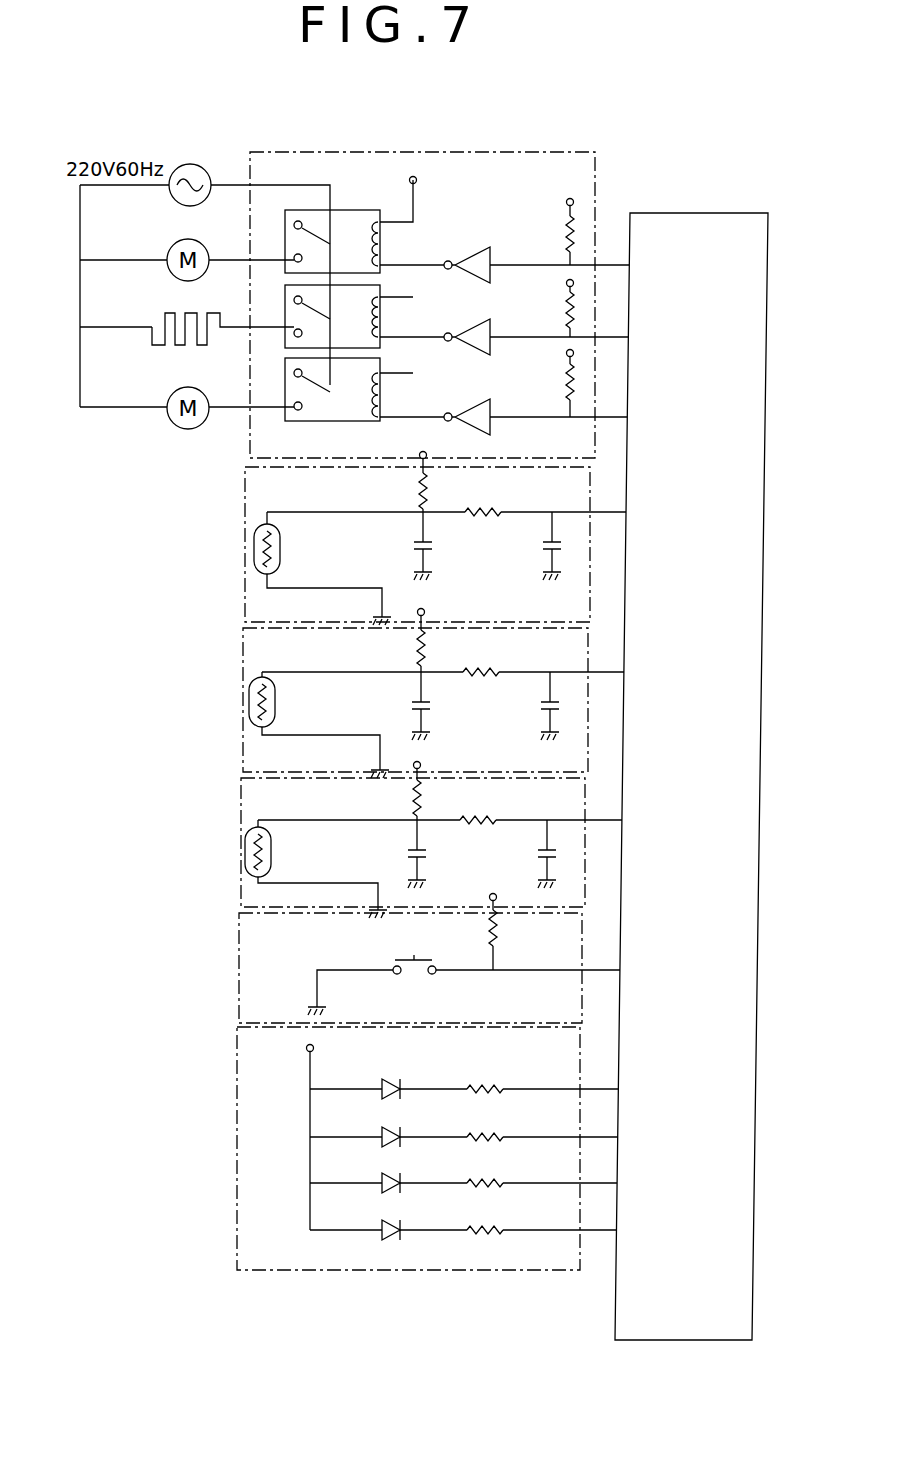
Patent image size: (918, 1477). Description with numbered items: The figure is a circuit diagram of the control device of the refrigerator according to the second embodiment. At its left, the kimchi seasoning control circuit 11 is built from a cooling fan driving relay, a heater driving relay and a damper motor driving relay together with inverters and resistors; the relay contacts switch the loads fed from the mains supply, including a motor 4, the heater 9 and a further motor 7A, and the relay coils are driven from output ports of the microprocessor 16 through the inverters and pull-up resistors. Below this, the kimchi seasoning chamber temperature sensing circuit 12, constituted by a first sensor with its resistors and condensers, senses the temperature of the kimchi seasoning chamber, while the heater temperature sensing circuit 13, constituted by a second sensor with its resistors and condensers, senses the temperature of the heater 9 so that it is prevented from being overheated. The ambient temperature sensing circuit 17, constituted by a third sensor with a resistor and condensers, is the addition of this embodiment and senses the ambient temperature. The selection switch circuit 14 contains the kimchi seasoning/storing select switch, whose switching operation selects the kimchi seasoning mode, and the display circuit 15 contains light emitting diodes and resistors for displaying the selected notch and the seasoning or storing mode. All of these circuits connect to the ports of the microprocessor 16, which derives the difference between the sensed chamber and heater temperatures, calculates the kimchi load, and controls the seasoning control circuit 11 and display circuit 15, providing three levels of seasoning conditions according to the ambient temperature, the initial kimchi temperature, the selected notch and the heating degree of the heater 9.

The kimchi seasoning control circuit 11 is at (298, 150).
The motor 4 is at (172, 244).
The heater 9 is at (168, 318).
The motor 7A is at (172, 396).
The microprocessor 16 is at (740, 213).
The kimchi seasoning chamber temperature sensing circuit 12 is at (240, 565).
The heater temperature sensing circuit 13 is at (240, 693).
The ambient temperature sensing circuit 17 is at (238, 845).
The selection switch circuit 14 is at (237, 995).
The display circuit 15 is at (237, 1082).